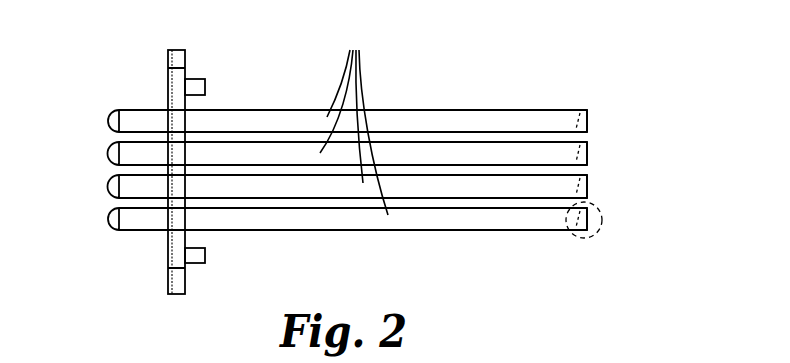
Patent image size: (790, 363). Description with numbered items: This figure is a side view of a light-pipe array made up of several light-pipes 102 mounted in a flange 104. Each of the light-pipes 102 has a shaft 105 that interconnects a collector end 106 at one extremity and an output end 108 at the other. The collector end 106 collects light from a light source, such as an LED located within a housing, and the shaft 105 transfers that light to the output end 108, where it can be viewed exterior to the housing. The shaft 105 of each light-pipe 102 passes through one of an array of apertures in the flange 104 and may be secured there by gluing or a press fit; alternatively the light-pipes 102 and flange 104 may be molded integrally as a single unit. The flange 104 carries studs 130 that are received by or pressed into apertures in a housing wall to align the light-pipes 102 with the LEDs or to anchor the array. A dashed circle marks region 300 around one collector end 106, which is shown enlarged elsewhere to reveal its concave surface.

The light-pipe 102 is at (354, 120).
The flange 104 is at (172, 77).
The shaft 105 is at (510, 155).
The collector end 106 is at (588, 149).
The output end 108 is at (107, 157).
The stud 130 is at (205, 88).
The region 300 is at (613, 219).